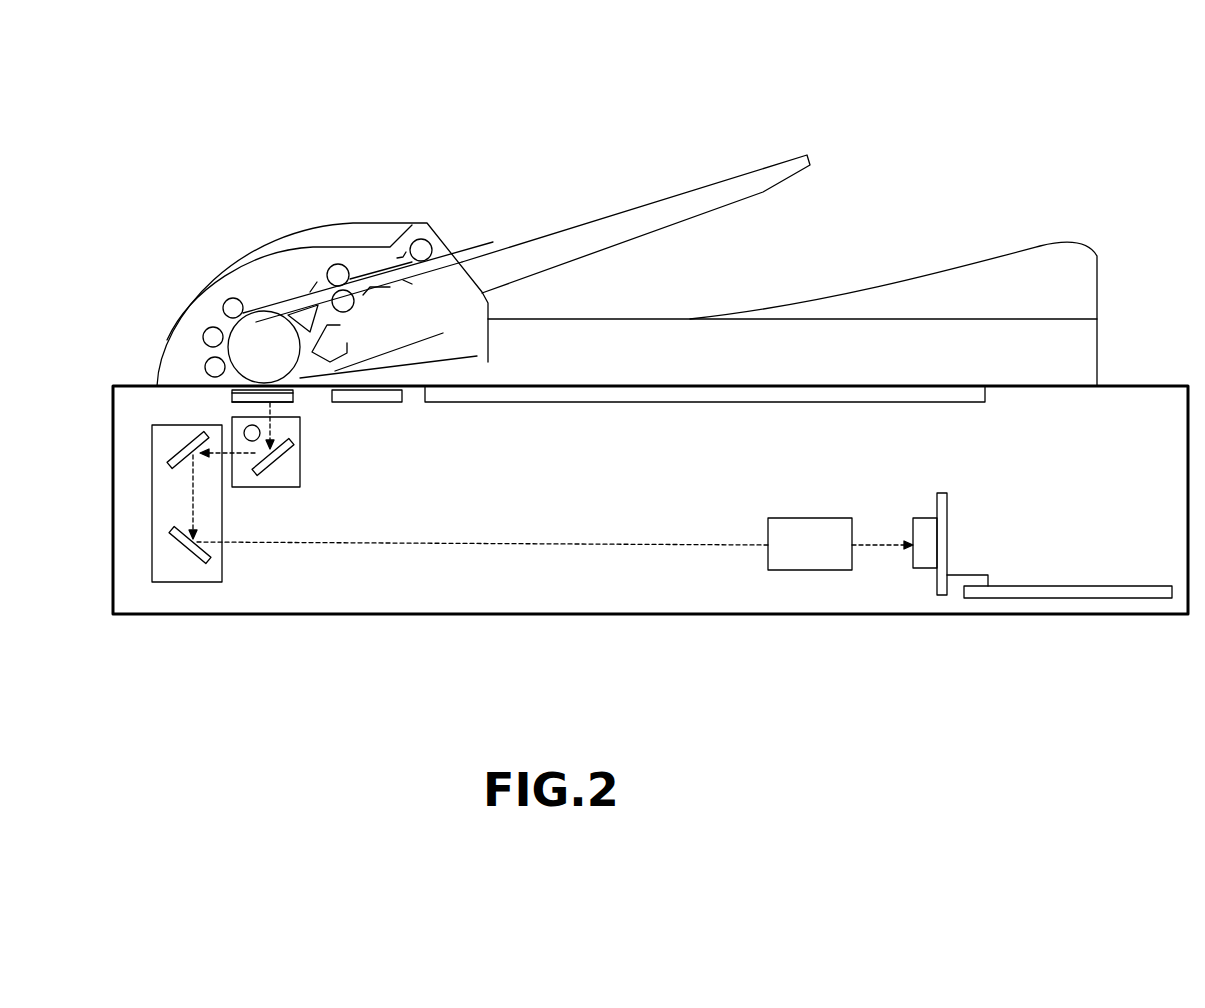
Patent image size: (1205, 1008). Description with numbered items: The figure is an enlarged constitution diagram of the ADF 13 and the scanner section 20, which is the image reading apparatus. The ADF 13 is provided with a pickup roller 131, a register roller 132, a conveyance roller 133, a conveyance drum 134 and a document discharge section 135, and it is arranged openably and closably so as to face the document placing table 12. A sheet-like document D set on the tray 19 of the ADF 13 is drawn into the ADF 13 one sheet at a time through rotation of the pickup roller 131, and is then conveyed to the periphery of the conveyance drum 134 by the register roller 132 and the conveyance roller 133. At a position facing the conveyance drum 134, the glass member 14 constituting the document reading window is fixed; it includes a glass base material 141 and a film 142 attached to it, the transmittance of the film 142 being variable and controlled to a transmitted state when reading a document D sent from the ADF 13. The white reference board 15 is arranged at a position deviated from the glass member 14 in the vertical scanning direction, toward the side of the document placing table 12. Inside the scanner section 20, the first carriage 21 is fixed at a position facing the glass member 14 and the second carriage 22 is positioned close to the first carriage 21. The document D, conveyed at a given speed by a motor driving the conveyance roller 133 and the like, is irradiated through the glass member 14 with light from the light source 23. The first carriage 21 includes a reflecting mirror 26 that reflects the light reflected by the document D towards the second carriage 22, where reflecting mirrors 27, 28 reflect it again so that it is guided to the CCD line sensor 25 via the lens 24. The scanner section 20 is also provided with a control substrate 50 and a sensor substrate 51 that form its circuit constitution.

The document placing table 12 is at (702, 397).
The ADF 13 is at (323, 217).
The glass member 14 is at (232, 393).
The white reference board 15 is at (400, 402).
The tray 19 is at (602, 217).
The scanner section 20 is at (584, 616).
The first carriage 21 is at (273, 487).
The second carriage 22 is at (150, 502).
The light source 23 is at (250, 445).
The lens 24 is at (808, 517).
The CCD line sensor 25 is at (915, 520).
The reflecting mirror 26 is at (287, 467).
The reflecting mirror 27 is at (167, 457).
The reflecting mirror 28 is at (183, 540).
The control substrate 50 is at (1105, 585).
The sensor substrate 51 is at (947, 500).
The pickup roller 131 is at (416, 237).
The register roller 132 is at (323, 263).
The conveyance roller 133 is at (203, 340).
The conveyance drum 134 is at (257, 330).
The document discharge section 135 is at (590, 318).
The glass base material 141 is at (293, 395).
The film 142 is at (287, 403).
The document D is at (471, 240).